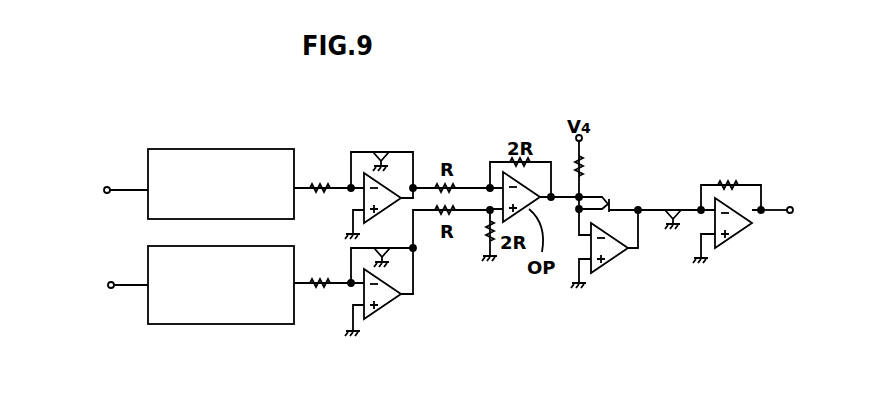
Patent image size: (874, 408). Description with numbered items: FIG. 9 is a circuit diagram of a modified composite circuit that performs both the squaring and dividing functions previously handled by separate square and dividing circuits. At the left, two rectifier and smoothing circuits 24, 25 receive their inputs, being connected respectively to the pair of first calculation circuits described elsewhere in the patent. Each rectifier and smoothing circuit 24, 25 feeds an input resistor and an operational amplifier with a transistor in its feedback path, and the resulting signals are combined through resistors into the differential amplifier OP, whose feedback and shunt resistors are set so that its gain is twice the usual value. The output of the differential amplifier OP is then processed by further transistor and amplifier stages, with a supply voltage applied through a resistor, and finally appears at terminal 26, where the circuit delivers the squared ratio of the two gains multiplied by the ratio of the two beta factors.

The rectifier and smoothing circuit 24 is at (250, 148).
The rectifier and smoothing circuit 25 is at (258, 246).
The output terminal 26 is at (794, 211).